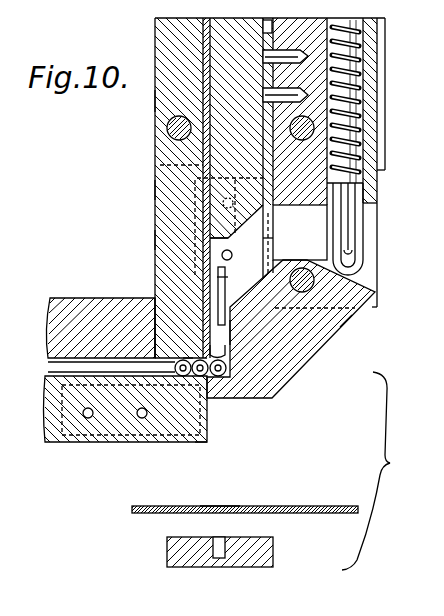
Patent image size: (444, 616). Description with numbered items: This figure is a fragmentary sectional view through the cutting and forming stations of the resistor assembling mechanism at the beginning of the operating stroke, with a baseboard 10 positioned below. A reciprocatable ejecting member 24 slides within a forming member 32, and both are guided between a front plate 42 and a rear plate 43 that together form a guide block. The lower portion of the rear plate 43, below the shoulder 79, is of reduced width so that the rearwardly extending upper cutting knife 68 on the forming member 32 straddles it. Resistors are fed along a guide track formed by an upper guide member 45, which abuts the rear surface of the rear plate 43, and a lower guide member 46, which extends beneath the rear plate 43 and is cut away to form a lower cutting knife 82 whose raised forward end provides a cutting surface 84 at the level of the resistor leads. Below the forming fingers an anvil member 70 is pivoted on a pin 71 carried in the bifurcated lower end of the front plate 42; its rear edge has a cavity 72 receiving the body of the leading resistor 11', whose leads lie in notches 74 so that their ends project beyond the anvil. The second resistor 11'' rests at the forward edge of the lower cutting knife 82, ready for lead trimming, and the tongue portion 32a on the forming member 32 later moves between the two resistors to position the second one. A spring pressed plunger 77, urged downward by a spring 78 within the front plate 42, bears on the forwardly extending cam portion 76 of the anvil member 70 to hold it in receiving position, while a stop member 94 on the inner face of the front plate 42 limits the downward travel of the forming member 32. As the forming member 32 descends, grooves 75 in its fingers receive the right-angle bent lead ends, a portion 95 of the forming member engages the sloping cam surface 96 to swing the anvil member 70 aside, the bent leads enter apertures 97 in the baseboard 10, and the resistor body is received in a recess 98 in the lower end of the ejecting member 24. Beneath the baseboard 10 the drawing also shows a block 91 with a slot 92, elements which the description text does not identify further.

The baseboard 10 is at (352, 497).
The leading resistor 11' is at (241, 356).
The second resistor 11'' is at (208, 393).
The ejecting member 24 is at (243, 27).
The forming member 32 is at (212, 33).
The tongue portion 32a is at (182, 307).
The front plate 42 is at (302, 32).
The rear plate 43 is at (160, 100).
The upper guide member 45 is at (90, 289).
The lower guide member 46 is at (50, 440).
The upper cutting knife 68 is at (190, 238).
The anvil member 70 is at (279, 379).
The pin 71 is at (342, 224).
The cavity 72 is at (231, 344).
The notches 74 is at (187, 358).
The groove 75 is at (221, 296).
The cam portion 76 is at (343, 313).
The spring pressed plunger 77 is at (352, 205).
The spring 78 is at (365, 83).
The shoulder 79 is at (160, 187).
The lower cutting knife 82 is at (203, 434).
The cutting surface 84 is at (156, 348).
The bottom block 91 is at (262, 551).
The slot 92 is at (219, 537).
The stop member 94 is at (272, 77).
The portion of the forming member 95 is at (267, 165).
The sloping cam surface 96 is at (248, 290).
The apertures 97 is at (220, 505).
The recess 98 is at (230, 240).